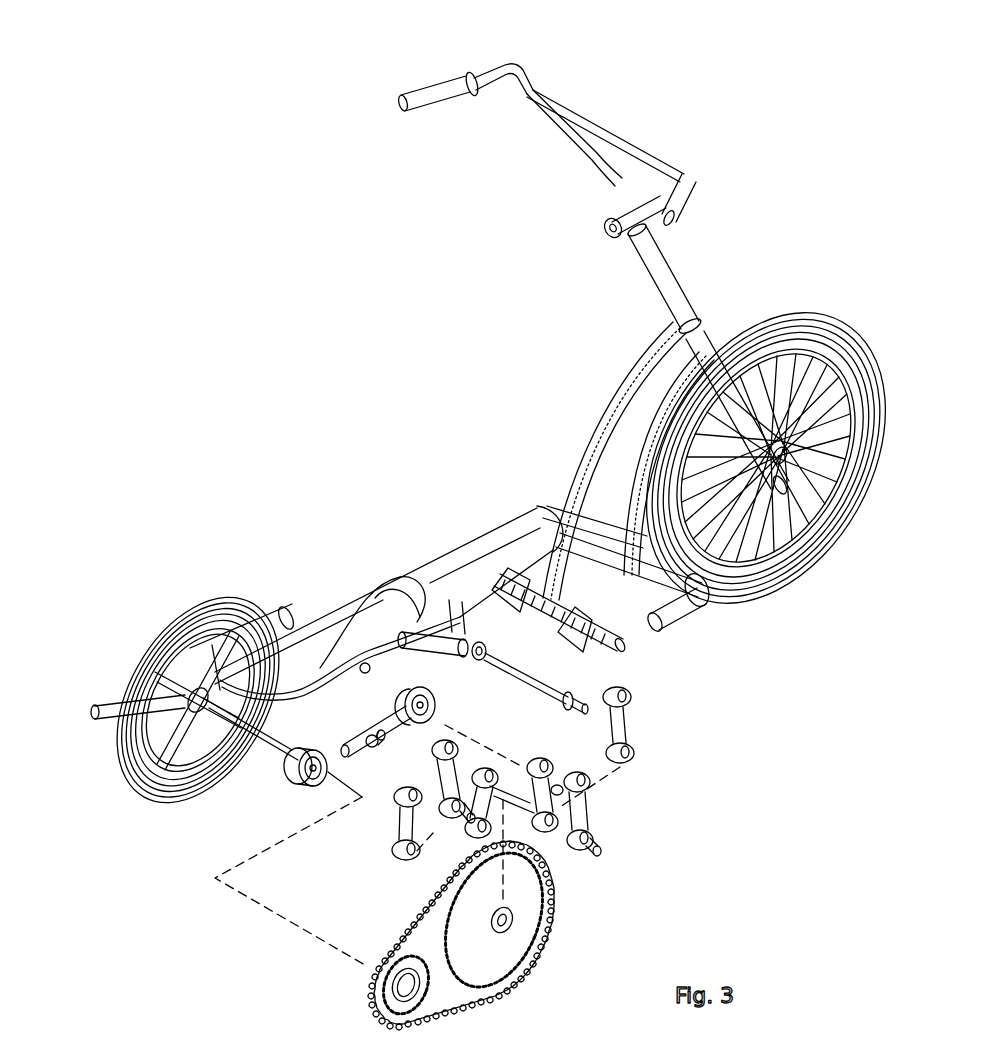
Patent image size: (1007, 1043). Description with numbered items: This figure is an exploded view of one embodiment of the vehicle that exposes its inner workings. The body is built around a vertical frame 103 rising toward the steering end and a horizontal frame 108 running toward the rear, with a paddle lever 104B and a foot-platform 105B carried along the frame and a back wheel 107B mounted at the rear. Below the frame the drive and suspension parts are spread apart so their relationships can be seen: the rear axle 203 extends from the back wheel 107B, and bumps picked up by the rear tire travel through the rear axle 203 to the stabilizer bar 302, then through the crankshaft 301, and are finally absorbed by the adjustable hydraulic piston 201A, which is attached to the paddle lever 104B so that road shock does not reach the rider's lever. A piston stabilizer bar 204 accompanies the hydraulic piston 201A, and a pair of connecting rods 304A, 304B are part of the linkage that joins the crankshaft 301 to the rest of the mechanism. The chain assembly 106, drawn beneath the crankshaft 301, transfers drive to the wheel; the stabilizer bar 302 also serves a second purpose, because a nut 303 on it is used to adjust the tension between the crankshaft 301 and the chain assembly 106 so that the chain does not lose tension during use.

The vertical frame 103 is at (610, 395).
The paddle lever 104B is at (487, 557).
The foot-platform 105B is at (327, 633).
The back wheel 107B is at (160, 642).
The horizontal frame 108 is at (700, 603).
The adjustable hydraulic piston 201A is at (437, 647).
The rear axle 203 is at (270, 752).
The piston stabilizer bar 204 is at (533, 680).
The crankshaft 301 is at (592, 813).
The stabilizer bar 302 is at (344, 742).
The nut 303 is at (375, 748).
The connecting rod 304A is at (404, 823).
The connecting rod 304B is at (633, 735).
The chain assembly 106 is at (530, 915).